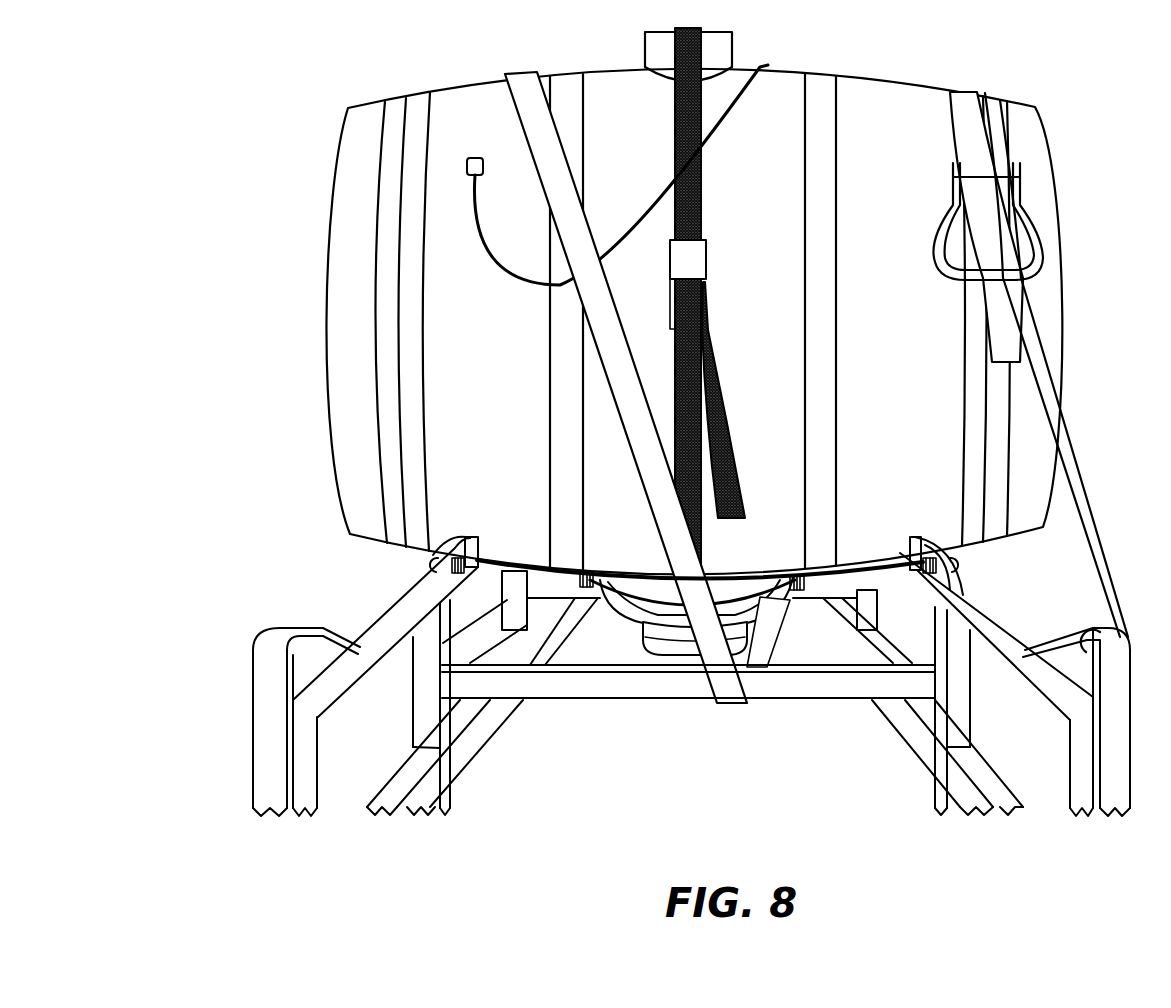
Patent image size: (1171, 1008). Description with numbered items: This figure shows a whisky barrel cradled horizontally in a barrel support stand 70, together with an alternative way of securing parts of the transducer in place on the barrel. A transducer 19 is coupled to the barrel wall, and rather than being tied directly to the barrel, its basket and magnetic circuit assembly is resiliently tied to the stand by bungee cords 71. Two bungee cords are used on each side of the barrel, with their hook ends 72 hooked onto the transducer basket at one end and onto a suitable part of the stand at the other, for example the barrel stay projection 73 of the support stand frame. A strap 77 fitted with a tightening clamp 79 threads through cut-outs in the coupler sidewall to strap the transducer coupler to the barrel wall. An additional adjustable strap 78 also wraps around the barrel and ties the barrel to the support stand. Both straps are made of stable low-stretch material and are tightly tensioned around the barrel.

The transducer 19 is at (667, 636).
The barrel support stand 70 is at (272, 722).
The bungee cords 71 is at (500, 573).
The hook ends 72 is at (425, 563).
The barrel stay projection 73 is at (427, 582).
The strap 77 is at (677, 128).
The adjustable strap 78 is at (525, 87).
The tightening clamp 79 is at (683, 263).